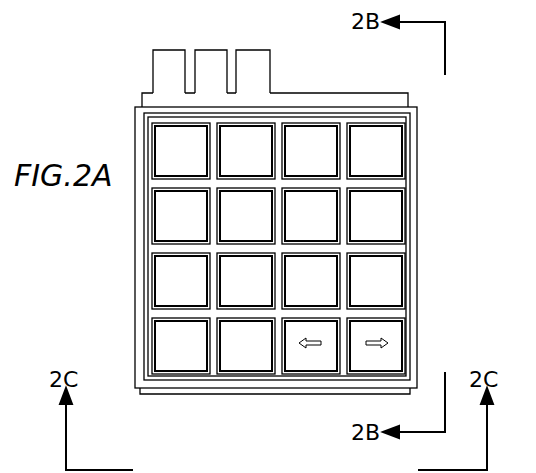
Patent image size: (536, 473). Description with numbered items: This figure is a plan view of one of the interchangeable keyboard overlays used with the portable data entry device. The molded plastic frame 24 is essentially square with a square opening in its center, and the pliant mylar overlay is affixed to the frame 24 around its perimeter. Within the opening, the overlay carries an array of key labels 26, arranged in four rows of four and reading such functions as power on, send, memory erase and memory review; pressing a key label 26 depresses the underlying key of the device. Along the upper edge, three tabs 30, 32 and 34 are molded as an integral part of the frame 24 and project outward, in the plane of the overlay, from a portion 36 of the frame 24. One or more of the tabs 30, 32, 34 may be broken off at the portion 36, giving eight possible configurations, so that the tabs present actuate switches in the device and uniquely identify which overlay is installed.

The frame 24 is at (412, 133).
The key labels 26 is at (385, 168).
The tab 30 is at (177, 50).
The tab 32 is at (213, 50).
The tab 34 is at (258, 50).
The portion of the frame 36 is at (341, 100).